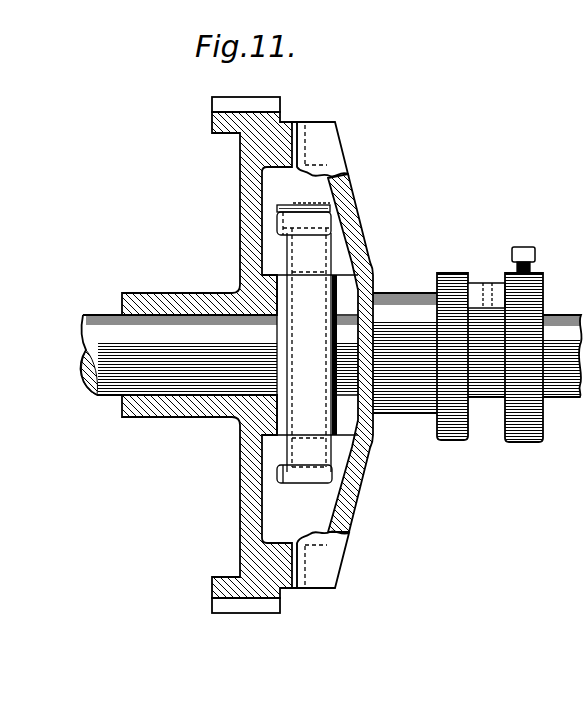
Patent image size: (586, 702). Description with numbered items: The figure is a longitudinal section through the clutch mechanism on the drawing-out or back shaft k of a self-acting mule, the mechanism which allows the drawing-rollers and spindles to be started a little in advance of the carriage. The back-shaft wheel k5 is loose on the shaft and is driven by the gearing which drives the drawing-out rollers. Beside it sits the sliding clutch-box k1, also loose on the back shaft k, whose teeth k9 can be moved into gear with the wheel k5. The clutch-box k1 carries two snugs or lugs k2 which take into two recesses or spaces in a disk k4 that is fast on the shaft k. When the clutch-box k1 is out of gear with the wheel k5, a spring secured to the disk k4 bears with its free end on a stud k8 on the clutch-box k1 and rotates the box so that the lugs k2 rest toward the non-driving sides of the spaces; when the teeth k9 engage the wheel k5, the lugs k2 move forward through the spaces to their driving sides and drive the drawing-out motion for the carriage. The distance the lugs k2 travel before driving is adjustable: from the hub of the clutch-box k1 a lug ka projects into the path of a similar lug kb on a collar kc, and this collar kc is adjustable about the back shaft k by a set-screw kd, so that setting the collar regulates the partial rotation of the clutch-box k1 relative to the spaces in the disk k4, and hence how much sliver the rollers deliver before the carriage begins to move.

The back shaft k is at (331, 353).
The back-shaft wheel k5 is at (247, 189).
The teeth k9 is at (303, 126).
The sliding clutch-box k1 is at (357, 233).
The stud k8 is at (285, 223).
The lugs k2 is at (300, 252).
The disk k4 is at (309, 350).
The lug ka is at (473, 280).
The lug kb is at (493, 281).
The collar kc is at (531, 303).
The set-screw kd is at (534, 250).